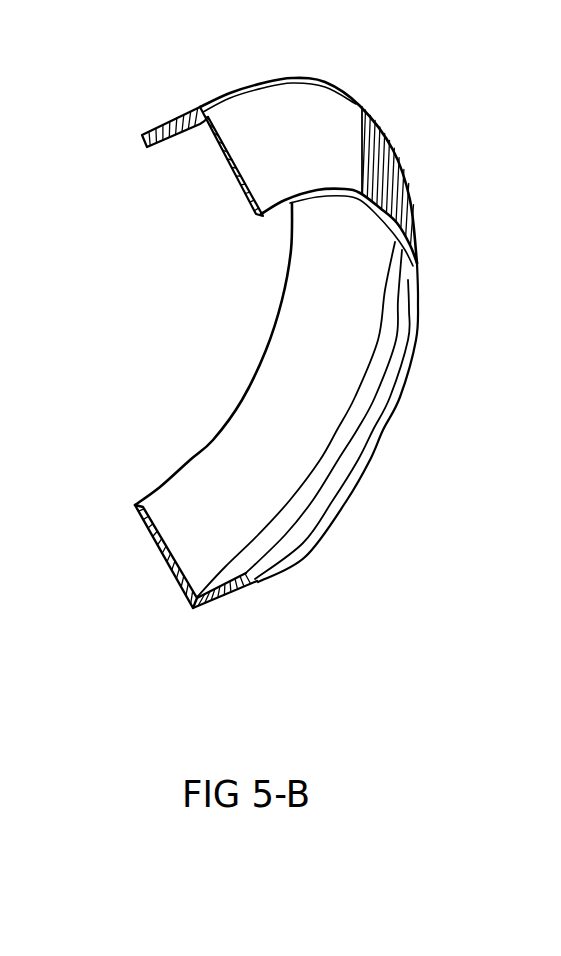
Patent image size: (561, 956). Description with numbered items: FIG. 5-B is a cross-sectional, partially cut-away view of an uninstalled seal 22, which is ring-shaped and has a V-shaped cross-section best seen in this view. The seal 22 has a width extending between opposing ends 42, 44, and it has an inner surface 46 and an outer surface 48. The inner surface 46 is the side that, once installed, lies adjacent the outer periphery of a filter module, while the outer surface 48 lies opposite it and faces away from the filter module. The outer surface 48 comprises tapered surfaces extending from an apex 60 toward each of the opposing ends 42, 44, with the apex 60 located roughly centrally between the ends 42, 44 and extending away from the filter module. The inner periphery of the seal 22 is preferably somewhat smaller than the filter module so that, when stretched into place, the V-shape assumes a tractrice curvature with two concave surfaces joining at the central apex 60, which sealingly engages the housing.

The seal 22 is at (413, 197).
The opposing end 42 is at (140, 137).
The opposing end 44 is at (259, 216).
The inner surface 46 is at (187, 560).
The outer surface 48 is at (352, 133).
The apex 60 is at (200, 108).